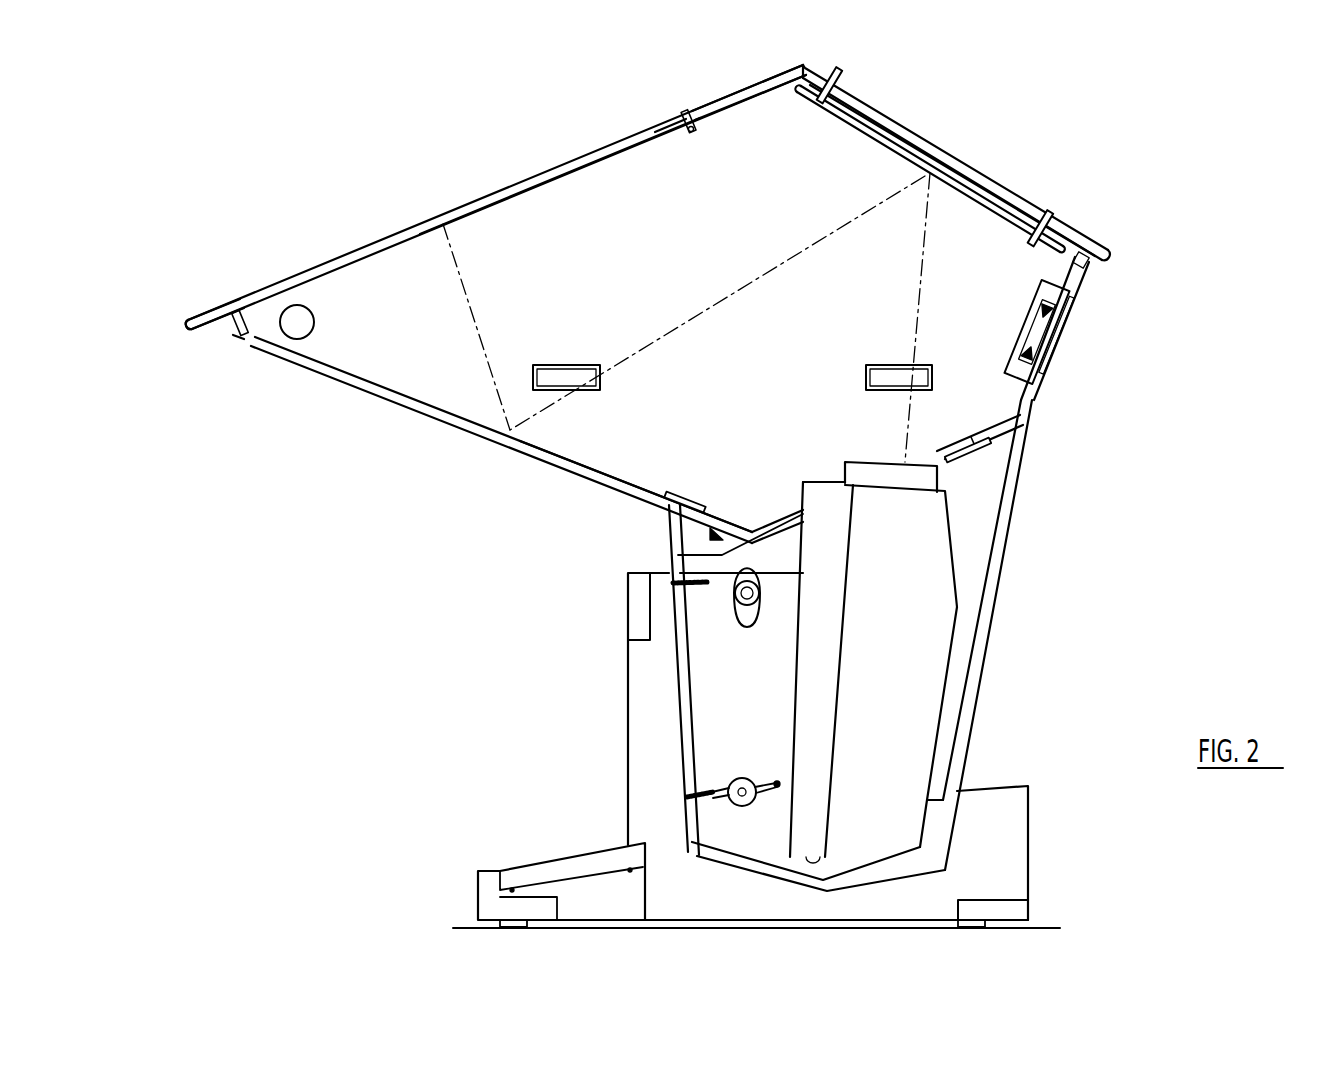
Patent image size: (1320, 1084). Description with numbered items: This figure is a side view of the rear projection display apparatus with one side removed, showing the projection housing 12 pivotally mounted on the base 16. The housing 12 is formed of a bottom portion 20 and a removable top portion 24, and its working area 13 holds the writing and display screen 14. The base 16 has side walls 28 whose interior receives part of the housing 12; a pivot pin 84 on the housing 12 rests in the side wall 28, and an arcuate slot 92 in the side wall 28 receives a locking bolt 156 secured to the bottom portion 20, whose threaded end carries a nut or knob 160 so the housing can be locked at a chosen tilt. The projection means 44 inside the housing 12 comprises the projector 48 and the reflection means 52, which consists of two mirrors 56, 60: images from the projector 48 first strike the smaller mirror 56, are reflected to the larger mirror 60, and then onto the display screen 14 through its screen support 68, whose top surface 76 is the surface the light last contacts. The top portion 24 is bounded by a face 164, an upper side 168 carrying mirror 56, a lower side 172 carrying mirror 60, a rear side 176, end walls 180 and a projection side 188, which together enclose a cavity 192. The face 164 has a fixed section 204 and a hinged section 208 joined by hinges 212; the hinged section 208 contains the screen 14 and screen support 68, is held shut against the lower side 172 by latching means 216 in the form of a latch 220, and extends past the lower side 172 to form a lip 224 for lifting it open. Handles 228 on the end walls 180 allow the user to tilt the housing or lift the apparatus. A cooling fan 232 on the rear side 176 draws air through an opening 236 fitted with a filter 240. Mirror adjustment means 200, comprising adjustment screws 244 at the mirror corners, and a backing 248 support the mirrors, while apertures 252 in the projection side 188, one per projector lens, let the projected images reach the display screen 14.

The projection housing 12 is at (496, 498).
The working area 13 is at (520, 152).
The writing and display screen 14 is at (478, 192).
The base 16 is at (1002, 840).
The bottom portion 20 is at (1018, 550).
The top portion 24 is at (1128, 297).
The side walls 28 is at (661, 773).
The projection means 44 is at (990, 401).
The projector 48 is at (905, 553).
The reflection means 52 is at (892, 222).
The mirror 56 is at (850, 142).
The mirror 60 is at (628, 478).
The screen support 68 is at (545, 188).
The top surface 76 is at (364, 246).
The pivot pin 84 is at (760, 594).
The slot 92 is at (760, 780).
The locking bolt 156 is at (712, 790).
The nut or knob 160 is at (746, 806).
The face 164 is at (678, 100).
The upper side 168 is at (903, 112).
The lower side 172 is at (402, 412).
The rear side 176 is at (1101, 268).
The end walls 180 is at (760, 343).
The projection side 188 is at (965, 451).
The cavity 192 is at (400, 346).
The mirror adjustment means 200 is at (790, 122).
The fixed section 204 is at (708, 108).
The hinged section 208 is at (664, 118).
The hinges 212 is at (691, 135).
The latching means 216 is at (208, 350).
The latch 220 is at (241, 338).
The lip 224 is at (205, 315).
The handles 228 is at (564, 374).
The cooling fan 232 is at (1025, 300).
The opening 236 is at (1040, 365).
The filter 240 is at (1075, 318).
The adjustment screws 244 is at (812, 98).
The backing 248 is at (888, 147).
The aperture 252 is at (898, 452).